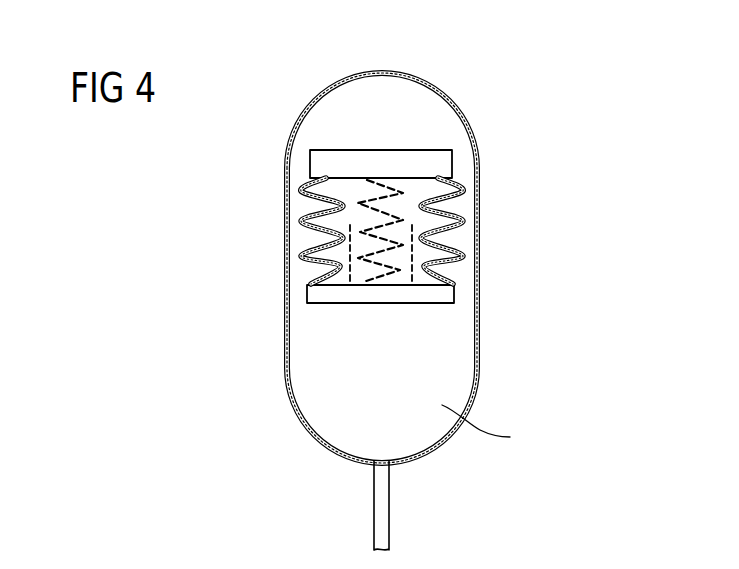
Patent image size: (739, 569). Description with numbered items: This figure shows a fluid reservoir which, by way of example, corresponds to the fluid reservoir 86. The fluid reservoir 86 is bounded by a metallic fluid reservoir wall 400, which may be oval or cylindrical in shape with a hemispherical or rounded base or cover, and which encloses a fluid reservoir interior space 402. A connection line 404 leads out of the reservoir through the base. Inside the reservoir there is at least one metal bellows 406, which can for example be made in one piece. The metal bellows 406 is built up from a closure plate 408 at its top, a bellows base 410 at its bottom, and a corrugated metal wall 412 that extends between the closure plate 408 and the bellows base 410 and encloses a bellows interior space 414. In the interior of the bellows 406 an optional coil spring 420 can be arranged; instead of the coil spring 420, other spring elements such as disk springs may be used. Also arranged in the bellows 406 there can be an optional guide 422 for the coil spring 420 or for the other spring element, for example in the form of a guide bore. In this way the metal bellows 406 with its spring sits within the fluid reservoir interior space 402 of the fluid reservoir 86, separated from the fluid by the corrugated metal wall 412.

The fluid reservoir 86 is at (452, 88).
The metallic fluid reservoir wall 400 is at (468, 130).
The fluid reservoir interior space 402 is at (421, 268).
The connection line 404 is at (390, 515).
The metal bellows 406 is at (450, 233).
The closure plate 408 is at (453, 163).
The bellows base 410 is at (455, 295).
The corrugated metal wall 412 is at (315, 212).
The bellows interior space 414 is at (327, 250).
The coil spring 420 is at (367, 263).
The guide 422 is at (423, 277).